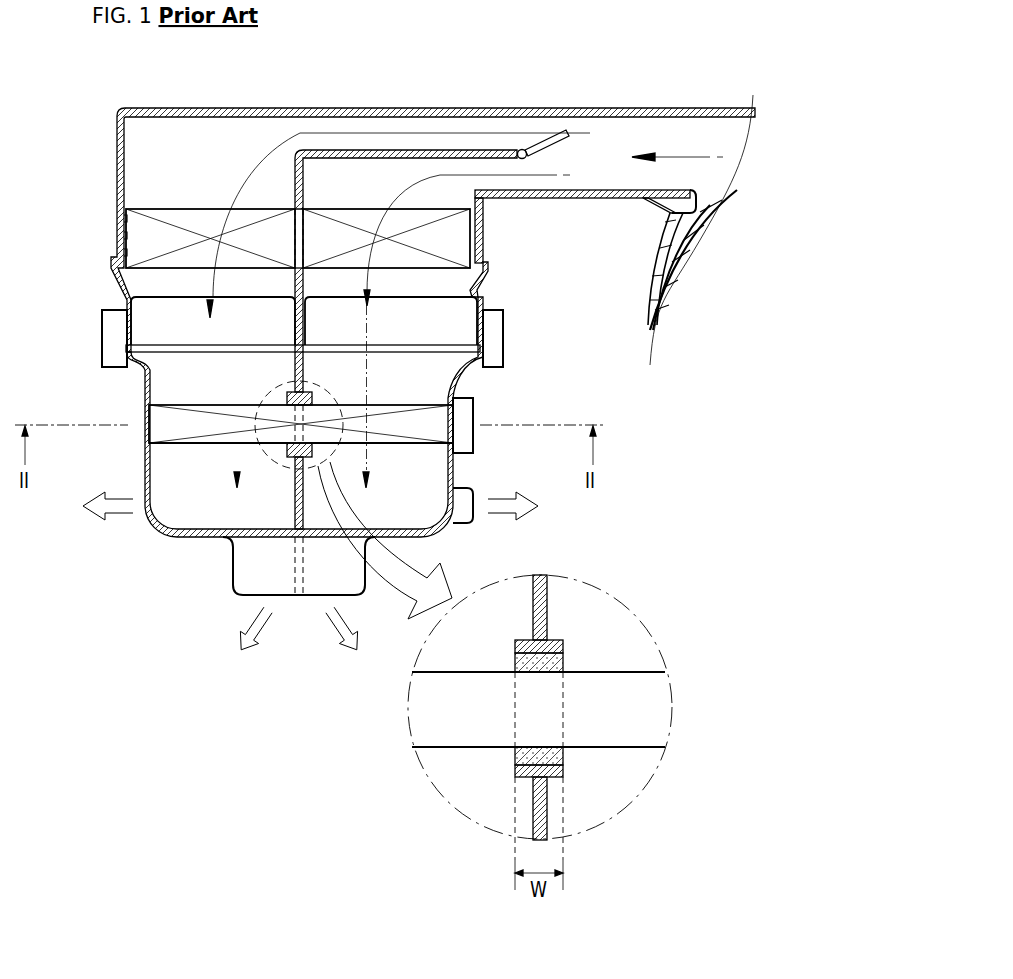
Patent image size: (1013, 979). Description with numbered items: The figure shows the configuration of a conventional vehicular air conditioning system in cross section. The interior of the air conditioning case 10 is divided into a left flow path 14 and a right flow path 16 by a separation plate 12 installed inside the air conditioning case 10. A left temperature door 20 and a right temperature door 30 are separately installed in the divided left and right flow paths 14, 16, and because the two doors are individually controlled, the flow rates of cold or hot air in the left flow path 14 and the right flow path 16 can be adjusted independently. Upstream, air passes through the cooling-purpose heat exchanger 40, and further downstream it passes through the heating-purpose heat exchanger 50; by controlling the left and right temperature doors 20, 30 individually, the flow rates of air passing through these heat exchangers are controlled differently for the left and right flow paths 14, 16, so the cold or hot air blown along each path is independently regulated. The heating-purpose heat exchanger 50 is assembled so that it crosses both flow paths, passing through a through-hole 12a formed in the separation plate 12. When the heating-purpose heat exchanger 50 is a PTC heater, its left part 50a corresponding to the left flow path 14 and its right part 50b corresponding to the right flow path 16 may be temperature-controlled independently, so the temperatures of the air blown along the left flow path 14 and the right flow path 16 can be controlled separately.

The air conditioning case 10 is at (450, 110).
The separation plate 12 is at (295, 163).
The through-hole 12a is at (567, 663).
The left flow path 14 is at (182, 196).
The right flow path 16 is at (349, 196).
The left temperature door 20 is at (117, 290).
The right temperature door 30 is at (472, 290).
The cooling-purpose heat exchanger 40 is at (140, 218).
The heating-purpose heat exchanger 50 is at (162, 425).
The left part 50a is at (167, 452).
The right part 50b is at (430, 447).